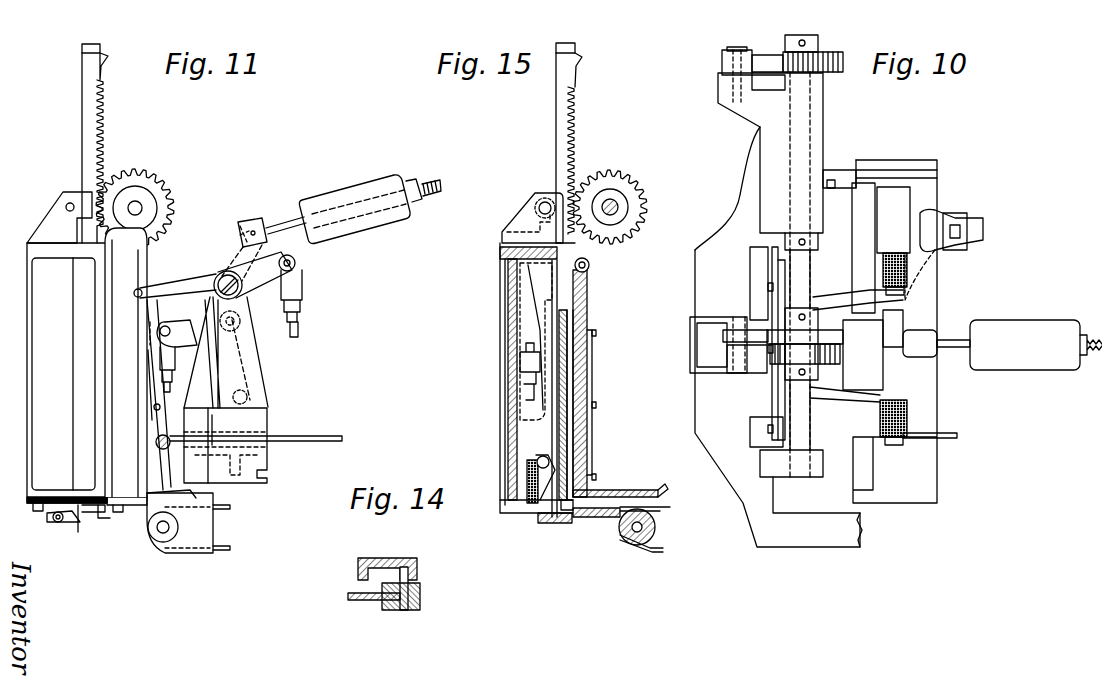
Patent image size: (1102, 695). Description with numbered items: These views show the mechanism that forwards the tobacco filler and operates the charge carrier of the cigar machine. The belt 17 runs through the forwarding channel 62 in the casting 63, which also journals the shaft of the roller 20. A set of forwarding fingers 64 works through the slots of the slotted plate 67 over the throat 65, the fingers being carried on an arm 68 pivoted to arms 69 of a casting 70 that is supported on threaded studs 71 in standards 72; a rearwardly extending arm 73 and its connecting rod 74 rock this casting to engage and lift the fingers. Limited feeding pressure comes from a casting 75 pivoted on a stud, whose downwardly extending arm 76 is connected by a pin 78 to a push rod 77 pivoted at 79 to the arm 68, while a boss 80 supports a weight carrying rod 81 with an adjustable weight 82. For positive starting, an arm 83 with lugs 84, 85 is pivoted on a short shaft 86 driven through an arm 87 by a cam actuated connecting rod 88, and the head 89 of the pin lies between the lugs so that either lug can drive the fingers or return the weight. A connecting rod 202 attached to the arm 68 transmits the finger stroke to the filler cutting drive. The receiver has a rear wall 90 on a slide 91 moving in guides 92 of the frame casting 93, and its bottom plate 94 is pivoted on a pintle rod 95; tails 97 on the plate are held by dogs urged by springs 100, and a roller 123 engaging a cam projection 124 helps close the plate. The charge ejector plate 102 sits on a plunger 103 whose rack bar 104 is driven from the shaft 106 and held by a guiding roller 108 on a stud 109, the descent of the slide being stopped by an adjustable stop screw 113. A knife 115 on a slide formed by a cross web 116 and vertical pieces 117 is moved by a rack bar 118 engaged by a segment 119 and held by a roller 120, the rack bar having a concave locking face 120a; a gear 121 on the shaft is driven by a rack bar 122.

In FIG. 11, the belt 17 is at (222, 552).
In FIG. 15, the belt 17 is at (668, 549).
In FIG. 11, the roller 20 is at (148, 530).
In FIG. 15, the roller 20 is at (640, 545).
In FIG. 15, the forwarding channel 62 is at (657, 510).
In FIG. 11, the casting 63 is at (180, 523).
In FIG. 11, the forwarding fingers 64 is at (200, 495).
In FIG. 15, the throat 65 is at (622, 495).
In FIG. 15, the slotted plate 67 is at (620, 489).
In FIG. 11, the arm 68 is at (153, 384).
In FIG. 11, the arms 69 is at (178, 285).
In FIG. 10, the arms 69 is at (845, 398).
In FIG. 10, the casting 70 is at (863, 355).
In FIG. 11, the threaded studs 71 is at (225, 283).
In FIG. 10, the threaded studs 71 is at (896, 447).
In FIG. 11, the standards 72 is at (198, 352).
In FIG. 10, the standards 72 is at (906, 418).
In FIG. 11, the rearwardly extending arm 73 is at (264, 280).
In FIG. 10, the rearwardly extending arm 73 is at (940, 243).
In FIG. 11, the connecting rod 74 is at (300, 292).
In FIG. 10, the casting 75 is at (893, 326).
In FIG. 11, the downwardly extending arm 76 is at (245, 359).
In FIG. 14, the downwardly extending arm 76 is at (420, 604).
In FIG. 11, the push rod 77 is at (158, 405).
In FIG. 14, the push rod 77 is at (355, 601).
In FIG. 11, the pin 78 is at (250, 392).
In FIG. 14, the pin 78 is at (403, 611).
In FIG. 11, the pivot 79 is at (154, 408).
In FIG. 11, the arm or boss 80 is at (247, 222).
In FIG. 10, the arm or boss 80 is at (914, 333).
In FIG. 11, the weight carrying rod 81 is at (280, 226).
In FIG. 10, the weight carrying rod 81 is at (953, 340).
In FIG. 11, the adjustable weight 82 is at (362, 190).
In FIG. 10, the adjustable weight 82 is at (1036, 345).
In FIG. 14, the arm 83 is at (380, 560).
In FIG. 11, the lug 84 is at (225, 445).
In FIG. 14, the lug 84 is at (358, 578).
In FIG. 11, the lug 85 is at (268, 400).
In FIG. 14, the lug 85 is at (418, 575).
In FIG. 11, the short shaft 86 is at (241, 322).
In FIG. 10, the short shaft 86 is at (905, 170).
In FIG. 11, the arm 87 is at (195, 322).
In FIG. 10, the arm 87 is at (876, 178).
In FIG. 11, the cam actuated connecting rod 88 is at (160, 349).
In FIG. 10, the cam actuated connecting rod 88 is at (834, 171).
In FIG. 14, the head 89 is at (405, 566).
In FIG. 15, the rear wall 90 is at (565, 512).
In FIG. 15, the slide 91 is at (540, 275).
In FIG. 10, the guides 92 is at (757, 245).
In FIG. 10, the casting 93 is at (719, 235).
In FIG. 11, the plate 94 is at (90, 515).
In FIG. 15, the plate 94 is at (563, 518).
In FIG. 15, the pintle rod 95 is at (553, 513).
In FIG. 15, the tails 97 is at (538, 516).
In FIG. 15, the springs 100 is at (528, 482).
In FIG. 15, the plate 102 is at (568, 505).
In FIG. 15, the plunger 103 is at (574, 428).
In FIG. 10, the rack bar 104 is at (755, 338).
In FIG. 15, the shaft 106 is at (611, 203).
In FIG. 10, the shaft 106 is at (805, 262).
In FIG. 10, the guiding roller 108 is at (727, 345).
In FIG. 11, the stud 109 is at (67, 203).
In FIG. 15, the adjustable stop screw 113 is at (525, 402).
In FIG. 15, the knife 115 is at (568, 375).
In FIG. 10, the knife 115 is at (768, 315).
In FIG. 15, the cross web 116 is at (588, 310).
In FIG. 15, the vertical pieces 117 is at (593, 340).
In FIG. 10, the vertical pieces 117 is at (770, 425).
In FIG. 15, the rack bar 118 is at (576, 252).
In FIG. 10, the rack bar 118 is at (758, 358).
In FIG. 15, the segment 119 is at (633, 200).
In FIG. 10, the roller 120 is at (727, 362).
In FIG. 11, the concave locking face 120a is at (104, 56).
In FIG. 15, the concave locking face 120a is at (580, 58).
In FIG. 10, the gear 121 is at (833, 53).
In FIG. 10, the rack bar 122 is at (757, 56).
In FIG. 11, the roller 123 is at (56, 525).
In FIG. 11, the cam projection 124 is at (78, 535).
In FIG. 11, the connecting rod 202 is at (300, 436).
In FIG. 10, the connecting rod 202 is at (952, 440).